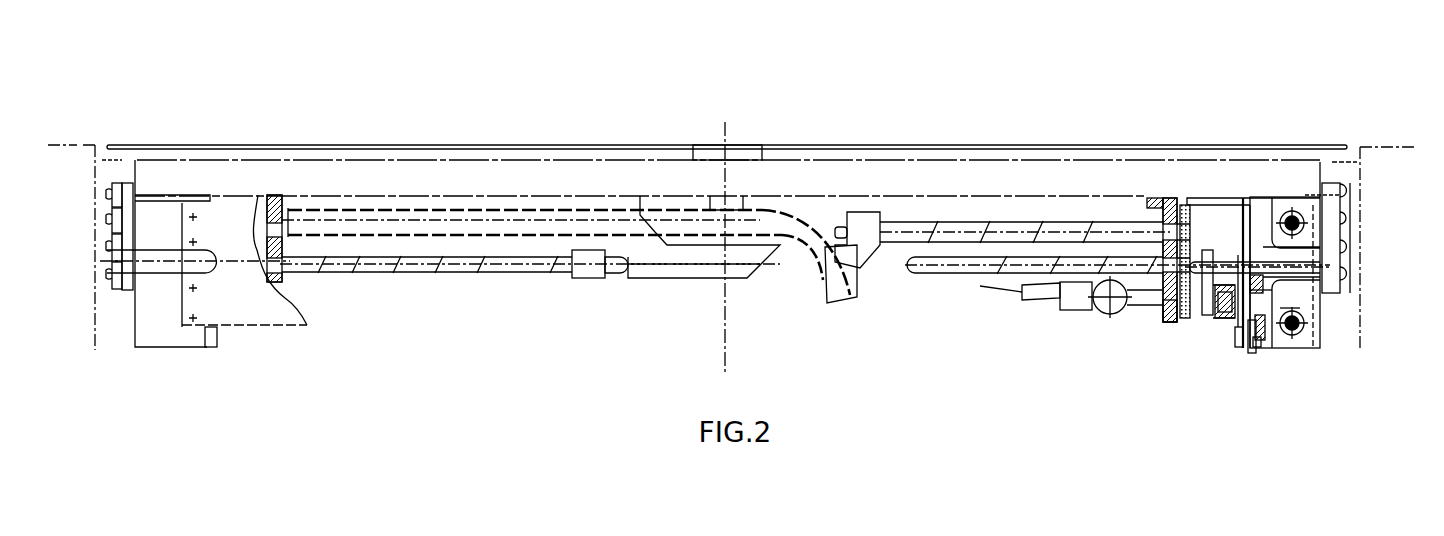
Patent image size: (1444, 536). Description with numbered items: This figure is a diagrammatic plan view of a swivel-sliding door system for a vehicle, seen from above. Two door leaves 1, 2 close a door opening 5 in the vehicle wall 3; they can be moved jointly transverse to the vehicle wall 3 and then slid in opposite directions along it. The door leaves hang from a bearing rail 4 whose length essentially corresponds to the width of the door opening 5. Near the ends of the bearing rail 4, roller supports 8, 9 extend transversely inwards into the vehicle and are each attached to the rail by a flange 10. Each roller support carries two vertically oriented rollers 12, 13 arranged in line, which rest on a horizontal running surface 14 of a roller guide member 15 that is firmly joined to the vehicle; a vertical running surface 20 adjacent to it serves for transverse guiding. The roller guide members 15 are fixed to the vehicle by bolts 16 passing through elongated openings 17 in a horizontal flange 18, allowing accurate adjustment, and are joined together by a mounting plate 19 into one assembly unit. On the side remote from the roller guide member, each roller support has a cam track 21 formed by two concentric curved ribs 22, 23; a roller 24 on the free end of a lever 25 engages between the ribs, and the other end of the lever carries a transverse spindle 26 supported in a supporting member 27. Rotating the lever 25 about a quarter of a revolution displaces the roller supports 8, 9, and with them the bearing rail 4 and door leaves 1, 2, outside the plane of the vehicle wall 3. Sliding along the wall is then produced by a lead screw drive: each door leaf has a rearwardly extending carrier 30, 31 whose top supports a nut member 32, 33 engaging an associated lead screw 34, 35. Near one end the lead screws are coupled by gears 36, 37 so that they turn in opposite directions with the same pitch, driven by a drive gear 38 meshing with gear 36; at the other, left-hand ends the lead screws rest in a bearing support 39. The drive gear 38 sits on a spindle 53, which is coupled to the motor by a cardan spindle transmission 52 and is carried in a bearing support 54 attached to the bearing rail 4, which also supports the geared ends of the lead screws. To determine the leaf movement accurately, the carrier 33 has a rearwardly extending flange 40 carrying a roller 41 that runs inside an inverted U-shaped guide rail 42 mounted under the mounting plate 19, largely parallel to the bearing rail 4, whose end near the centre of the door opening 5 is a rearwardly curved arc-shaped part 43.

The door leaf 1 is at (387, 146).
The door leaf 2 is at (985, 146).
The vehicle wall 3 is at (82, 143).
The bearing rail 4 is at (953, 172).
The door opening 5 is at (1353, 150).
The roller support 8 is at (1238, 330).
The roller support 9 is at (215, 337).
The flange 10 is at (1200, 197).
The roller 12 is at (1300, 232).
The roller 13 is at (1257, 348).
The running surface 14 is at (1258, 345).
The roller guide member 15 is at (148, 337).
The bolt 16 is at (1350, 190).
The opening 17 is at (1300, 309).
The horizontal flange 18 is at (1310, 335).
The mounting plate 19 is at (262, 307).
The vertical running surface 20 is at (1258, 295).
The cam track 21 is at (1228, 313).
The curved rib 22 is at (1228, 322).
The curved rib 23 is at (1228, 276).
The roller 24 is at (1215, 313).
The lever 25 is at (1212, 262).
The transverse spindle 26 is at (1243, 258).
The supporting member 27 is at (157, 250).
The carrier 30 is at (705, 274).
The carrier 31 is at (815, 197).
The nut member 32 is at (590, 274).
The nut member 33 is at (855, 210).
The lead screw 34 is at (500, 268).
The lead screw 35 is at (930, 220).
The gear 36 is at (1165, 228).
The gear 37 is at (1172, 198).
The drive gear 38 is at (1183, 320).
The bearing support 39 is at (283, 280).
The rearwardly extending flange 40 is at (858, 270).
The roller 41 is at (842, 292).
The guide rail 42 is at (497, 214).
The arc-shaped part 43 is at (817, 272).
The cardan spindle transmission 52 is at (1047, 300).
The spindle 53 is at (1162, 312).
The bearing support 54 is at (1152, 200).